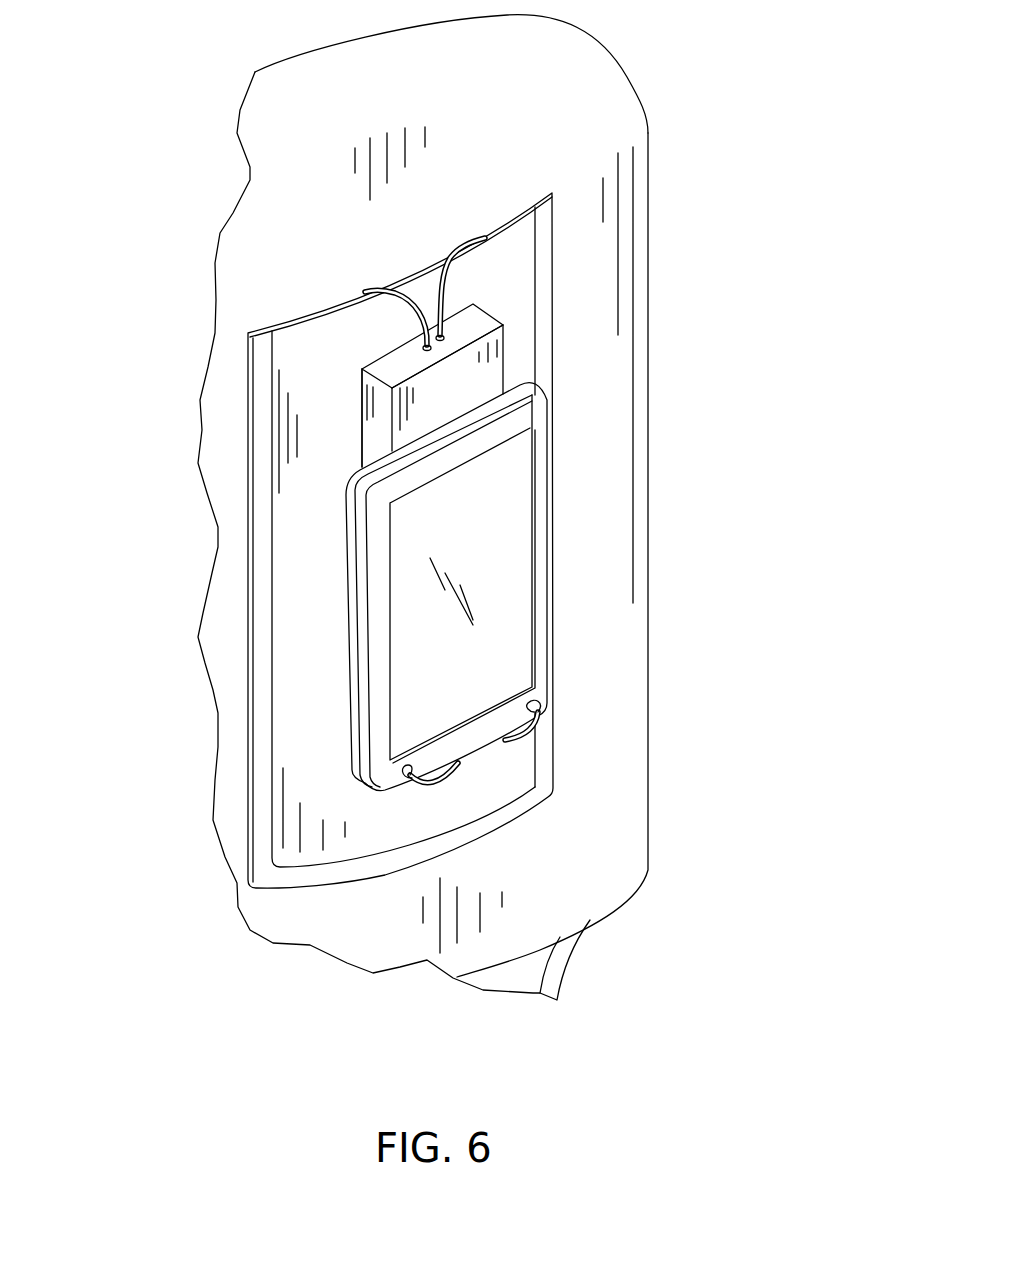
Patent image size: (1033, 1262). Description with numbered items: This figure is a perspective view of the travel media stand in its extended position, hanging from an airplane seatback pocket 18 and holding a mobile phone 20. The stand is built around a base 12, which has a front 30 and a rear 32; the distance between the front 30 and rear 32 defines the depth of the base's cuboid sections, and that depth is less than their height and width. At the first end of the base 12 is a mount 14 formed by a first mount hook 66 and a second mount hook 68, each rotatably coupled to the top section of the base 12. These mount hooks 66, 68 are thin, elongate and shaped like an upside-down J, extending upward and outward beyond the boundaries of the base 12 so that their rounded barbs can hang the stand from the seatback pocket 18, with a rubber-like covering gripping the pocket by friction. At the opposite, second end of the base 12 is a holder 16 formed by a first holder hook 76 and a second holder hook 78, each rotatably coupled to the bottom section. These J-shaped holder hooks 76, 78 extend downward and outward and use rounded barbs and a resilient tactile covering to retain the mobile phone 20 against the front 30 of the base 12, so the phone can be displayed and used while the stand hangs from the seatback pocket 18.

The base 12 is at (487, 355).
The mount 14 is at (247, 160).
The holder 16 is at (527, 778).
The airplane seatback pocket 18 is at (302, 377).
The mobile phone 20 is at (380, 561).
The front 30 is at (477, 383).
The rear 32 is at (360, 415).
The first mount hook 66 is at (378, 291).
The second mount hook 68 is at (457, 252).
The first holder hook 76 is at (433, 778).
The second holder hook 78 is at (528, 729).